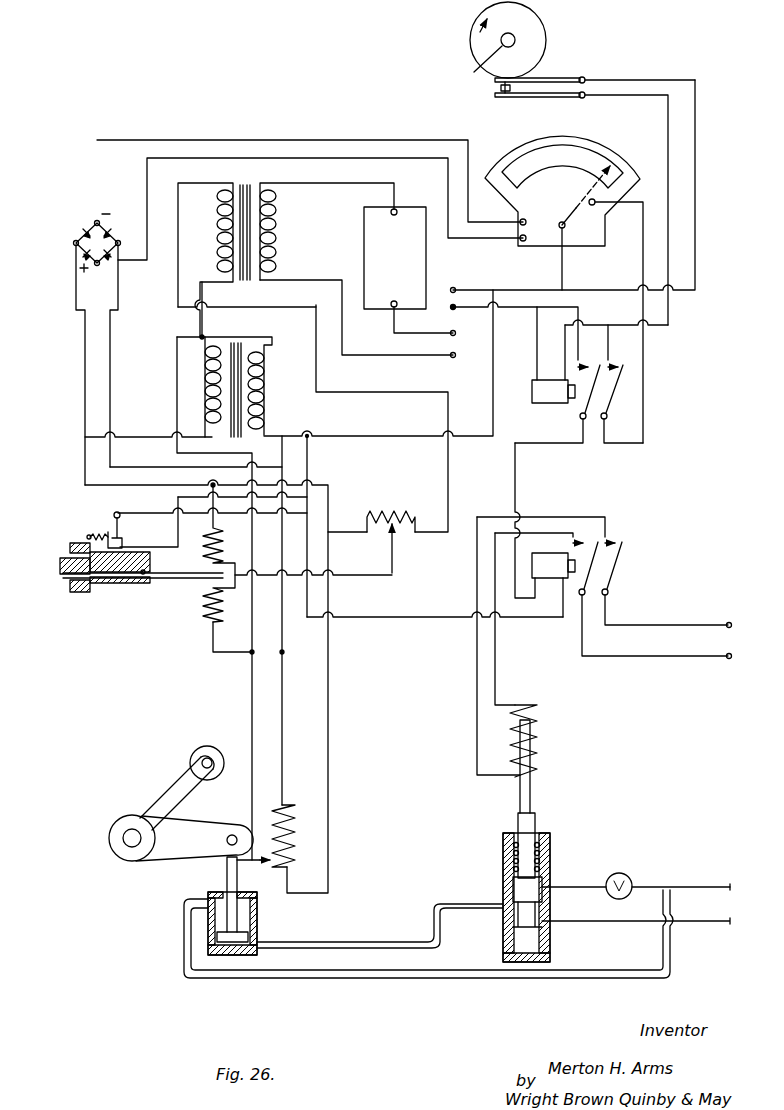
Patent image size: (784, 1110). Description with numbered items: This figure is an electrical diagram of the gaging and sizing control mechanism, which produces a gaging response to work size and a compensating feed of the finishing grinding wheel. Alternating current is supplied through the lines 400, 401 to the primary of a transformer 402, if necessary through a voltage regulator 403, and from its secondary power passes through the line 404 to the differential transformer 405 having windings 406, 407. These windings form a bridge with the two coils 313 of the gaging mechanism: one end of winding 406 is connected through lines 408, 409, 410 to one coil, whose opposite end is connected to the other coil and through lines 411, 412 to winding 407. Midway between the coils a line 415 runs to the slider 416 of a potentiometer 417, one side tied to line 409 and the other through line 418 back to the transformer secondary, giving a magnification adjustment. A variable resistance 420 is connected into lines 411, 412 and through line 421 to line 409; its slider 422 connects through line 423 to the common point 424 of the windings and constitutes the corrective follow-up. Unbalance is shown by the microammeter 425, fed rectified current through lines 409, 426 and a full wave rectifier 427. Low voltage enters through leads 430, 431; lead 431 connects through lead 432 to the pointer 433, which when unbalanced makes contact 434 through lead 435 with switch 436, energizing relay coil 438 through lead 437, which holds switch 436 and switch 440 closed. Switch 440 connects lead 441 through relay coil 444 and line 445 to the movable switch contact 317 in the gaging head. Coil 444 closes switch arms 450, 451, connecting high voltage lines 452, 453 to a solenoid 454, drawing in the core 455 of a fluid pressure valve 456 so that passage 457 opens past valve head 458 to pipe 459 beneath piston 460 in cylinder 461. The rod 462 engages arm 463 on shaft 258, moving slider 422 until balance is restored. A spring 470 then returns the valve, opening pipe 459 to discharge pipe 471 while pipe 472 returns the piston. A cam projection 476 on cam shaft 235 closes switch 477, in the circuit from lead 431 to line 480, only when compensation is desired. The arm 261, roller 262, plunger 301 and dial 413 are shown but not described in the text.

The cam shaft 235 is at (474, 72).
The shaft 258 is at (128, 842).
The arm 261 is at (170, 792).
The roller 262 is at (198, 748).
The armature plunger 301 is at (175, 582).
The coils 313 is at (220, 560).
The movable switch contact 317 is at (114, 518).
The line 400 is at (421, 345).
The line 401 is at (436, 360).
The transformer 402 is at (252, 178).
The voltage regulator 403 is at (364, 232).
The line 404 is at (202, 272).
The differential transformer 405 is at (240, 352).
The winding 406 is at (205, 395).
The winding 407 is at (266, 390).
The line 408 is at (144, 440).
The line 409 is at (85, 460).
The line 410 is at (210, 490).
The line 411 is at (236, 656).
The line 412 is at (284, 651).
The indicator dial 413 is at (545, 30).
The line 415 is at (357, 574).
The slider 416 is at (394, 556).
The potentiometer 417 is at (400, 508).
The line 418 is at (450, 430).
The variable resistance 420 is at (290, 804).
The line 421 is at (332, 752).
The slider 422 is at (262, 866).
The line 423 is at (252, 724).
The common point 424 is at (200, 336).
The microammeter 425 is at (574, 162).
The line 426 is at (112, 392).
The full wave rectifier 427 is at (90, 347).
The lead 430 is at (471, 315).
The lead 431 is at (480, 290).
The lead 432 is at (562, 272).
The pointer 433 is at (570, 214).
The contact 434 is at (600, 206).
The lead 435 is at (643, 255).
The switch 436 is at (615, 390).
The lead 437 is at (608, 350).
The relay coil 438 is at (550, 390).
The switch 440 is at (590, 412).
The lead 441 is at (518, 490).
The relay coil 444 is at (548, 572).
The line 445 is at (540, 630).
The switch arm 450 is at (592, 580).
The switch arm 451 is at (628, 550).
The high voltage line 452 is at (710, 630).
The high voltage line 453 is at (702, 668).
The solenoid 454 is at (540, 735).
The core 455 is at (528, 800).
The fluid pressure valve 456 is at (536, 830).
The fluid pressure passage 457 is at (590, 884).
The valve head 458 is at (520, 900).
The pipe 459 is at (396, 946).
The piston 460 is at (250, 940).
The fluid pressure cylinder 461 is at (236, 960).
The rod 462 is at (226, 878).
The arm 463 is at (220, 832).
The spring 470 is at (512, 852).
The discharge pipe 471 is at (622, 926).
The pipe 472 is at (470, 980).
The cam projection 476 is at (545, 70).
The switch 477 is at (500, 96).
The line 480 is at (668, 118).